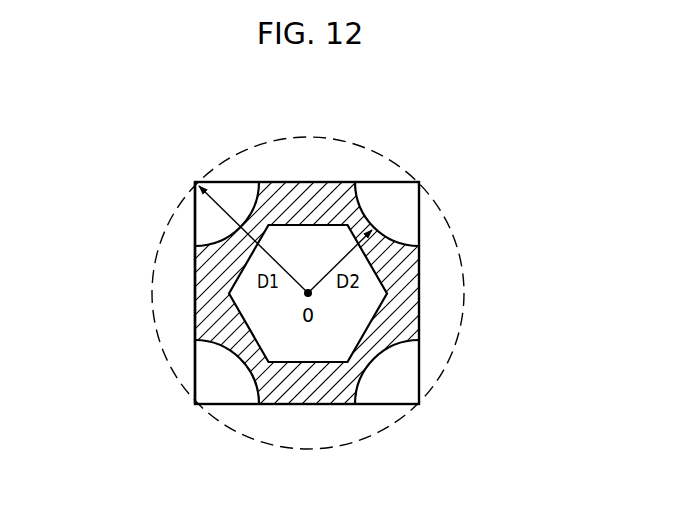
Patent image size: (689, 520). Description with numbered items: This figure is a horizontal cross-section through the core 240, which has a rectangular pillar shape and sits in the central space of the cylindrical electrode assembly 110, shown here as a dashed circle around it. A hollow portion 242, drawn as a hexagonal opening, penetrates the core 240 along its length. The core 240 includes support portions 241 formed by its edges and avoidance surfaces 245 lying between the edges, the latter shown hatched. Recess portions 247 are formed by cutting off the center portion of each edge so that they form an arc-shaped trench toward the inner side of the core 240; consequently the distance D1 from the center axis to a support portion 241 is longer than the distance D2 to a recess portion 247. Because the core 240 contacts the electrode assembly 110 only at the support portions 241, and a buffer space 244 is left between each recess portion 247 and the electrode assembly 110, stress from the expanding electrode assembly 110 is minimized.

The electrode assembly 110 is at (466, 262).
The core 240 is at (262, 176).
The support portions 241 is at (419, 182).
The hollow portion 242 is at (310, 345).
The buffer space 244 is at (176, 318).
The avoidance surfaces 245 is at (332, 182).
The recess portions 247 is at (383, 369).